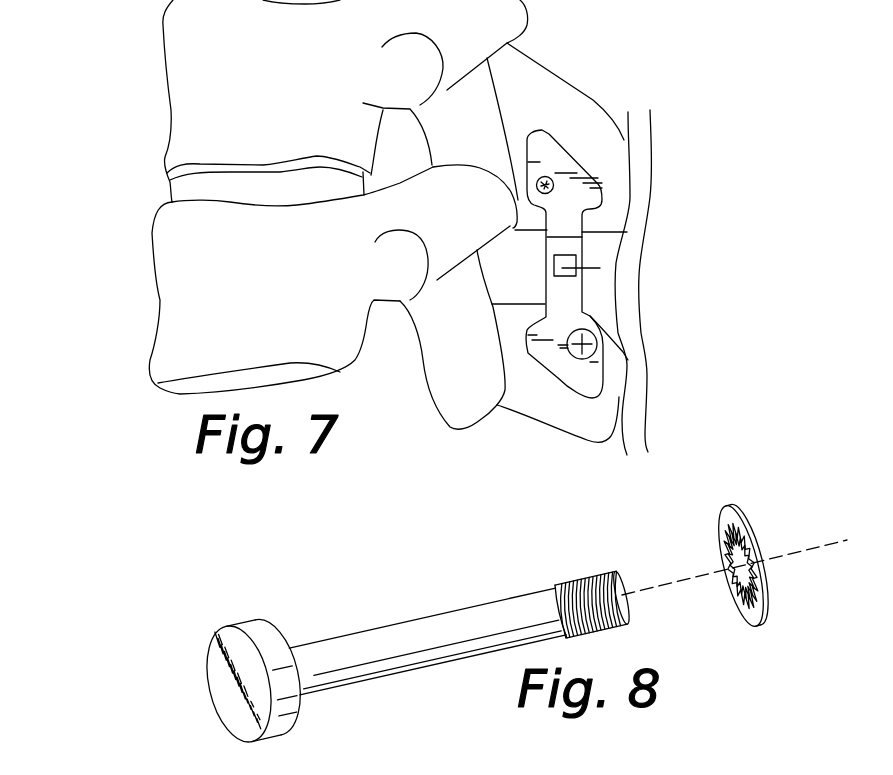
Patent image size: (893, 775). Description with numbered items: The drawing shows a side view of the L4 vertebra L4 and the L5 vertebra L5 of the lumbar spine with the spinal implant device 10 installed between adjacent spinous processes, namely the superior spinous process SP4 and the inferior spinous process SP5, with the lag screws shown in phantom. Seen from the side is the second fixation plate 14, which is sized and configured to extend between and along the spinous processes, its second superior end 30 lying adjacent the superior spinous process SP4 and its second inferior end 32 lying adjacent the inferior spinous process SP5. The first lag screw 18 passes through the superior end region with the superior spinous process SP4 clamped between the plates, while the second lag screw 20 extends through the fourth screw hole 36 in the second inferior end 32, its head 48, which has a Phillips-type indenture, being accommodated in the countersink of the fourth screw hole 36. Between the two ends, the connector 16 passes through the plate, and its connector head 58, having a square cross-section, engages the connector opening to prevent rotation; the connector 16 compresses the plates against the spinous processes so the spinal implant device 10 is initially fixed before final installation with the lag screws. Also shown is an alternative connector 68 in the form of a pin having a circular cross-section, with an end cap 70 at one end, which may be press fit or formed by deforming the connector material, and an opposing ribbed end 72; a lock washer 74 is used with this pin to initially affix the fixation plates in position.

In FIG. 7, the spinal implant device 10 is at (556, 297).
In FIG. 7, the second fixation plate 14 is at (575, 239).
In FIG. 7, the connector 16 is at (566, 264).
In FIG. 7, the first lag screw 18 is at (537, 179).
In FIG. 7, the second lag screw 20 is at (596, 334).
In FIG. 7, the second superior end 30 is at (573, 163).
In FIG. 7, the second inferior end 32 is at (570, 370).
In FIG. 7, the fourth screw hole 36 is at (543, 180).
In FIG. 7, the head 48 is at (590, 352).
In FIG. 7, the connector head 58 is at (566, 273).
In FIG. 7, the L4 vertebra L4 is at (112, 82).
In FIG. 7, the L5 vertebra L5 is at (112, 288).
In FIG. 7, the superior spinous process SP4 is at (587, 110).
In FIG. 7, the inferior spinous process SP5 is at (578, 430).
In FIG. 8, the connector 68 is at (383, 626).
In FIG. 8, the end cap 70 is at (222, 697).
In FIG. 8, the ribbed end 72 is at (565, 583).
In FIG. 8, the lock washer 74 is at (747, 513).